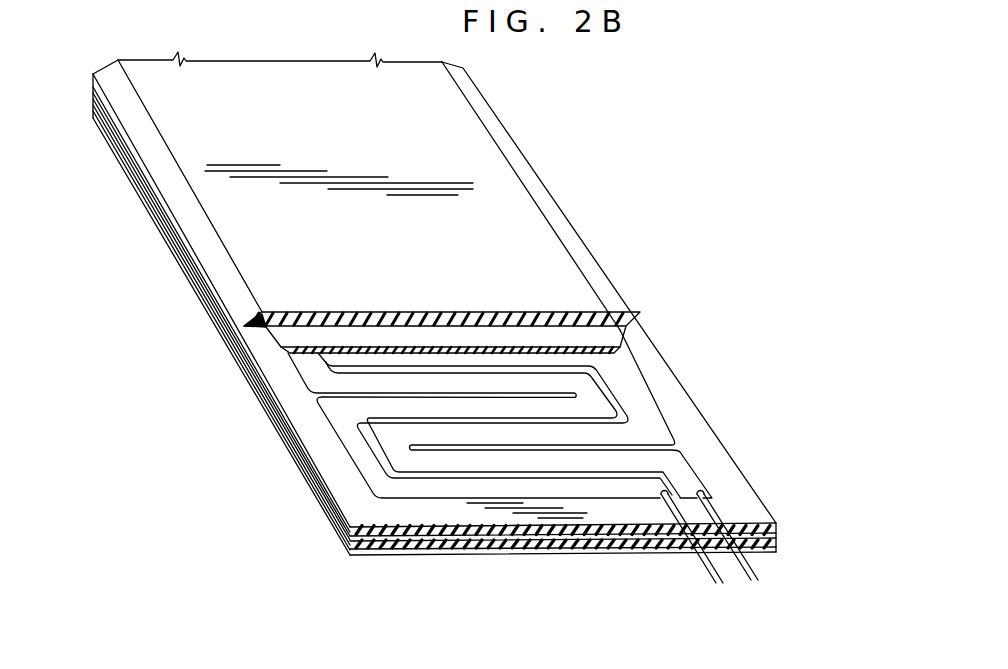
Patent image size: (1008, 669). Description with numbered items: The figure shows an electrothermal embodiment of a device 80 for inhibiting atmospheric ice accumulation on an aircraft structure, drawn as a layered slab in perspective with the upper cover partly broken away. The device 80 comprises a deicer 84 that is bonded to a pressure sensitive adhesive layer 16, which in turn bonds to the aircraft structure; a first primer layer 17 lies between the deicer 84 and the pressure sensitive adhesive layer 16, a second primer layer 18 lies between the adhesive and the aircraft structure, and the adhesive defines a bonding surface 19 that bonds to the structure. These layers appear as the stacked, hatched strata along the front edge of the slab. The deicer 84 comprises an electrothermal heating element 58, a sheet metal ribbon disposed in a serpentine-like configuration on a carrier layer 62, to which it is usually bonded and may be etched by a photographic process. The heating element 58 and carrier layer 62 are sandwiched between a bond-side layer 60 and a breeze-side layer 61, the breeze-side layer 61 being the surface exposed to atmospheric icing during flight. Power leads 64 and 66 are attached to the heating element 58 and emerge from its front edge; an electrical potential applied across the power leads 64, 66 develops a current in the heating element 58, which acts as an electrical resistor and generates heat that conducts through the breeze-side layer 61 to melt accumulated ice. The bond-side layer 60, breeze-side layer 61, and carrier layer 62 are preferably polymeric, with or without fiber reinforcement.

The device 80 is at (556, 157).
The deicer 84 is at (529, 225).
The carrier layer 62 is at (561, 331).
The breeze-side layer 61 is at (606, 318).
The electrothermal heating element 58 is at (634, 398).
The power lead 64 is at (760, 578).
The power lead 66 is at (721, 590).
The bond-side layer 60 is at (400, 530).
The first primer layer 17 is at (486, 543).
The pressure sensitive adhesive layer 16 is at (541, 547).
The second primer layer 18 is at (600, 550).
The bonding surface 19 is at (633, 556).